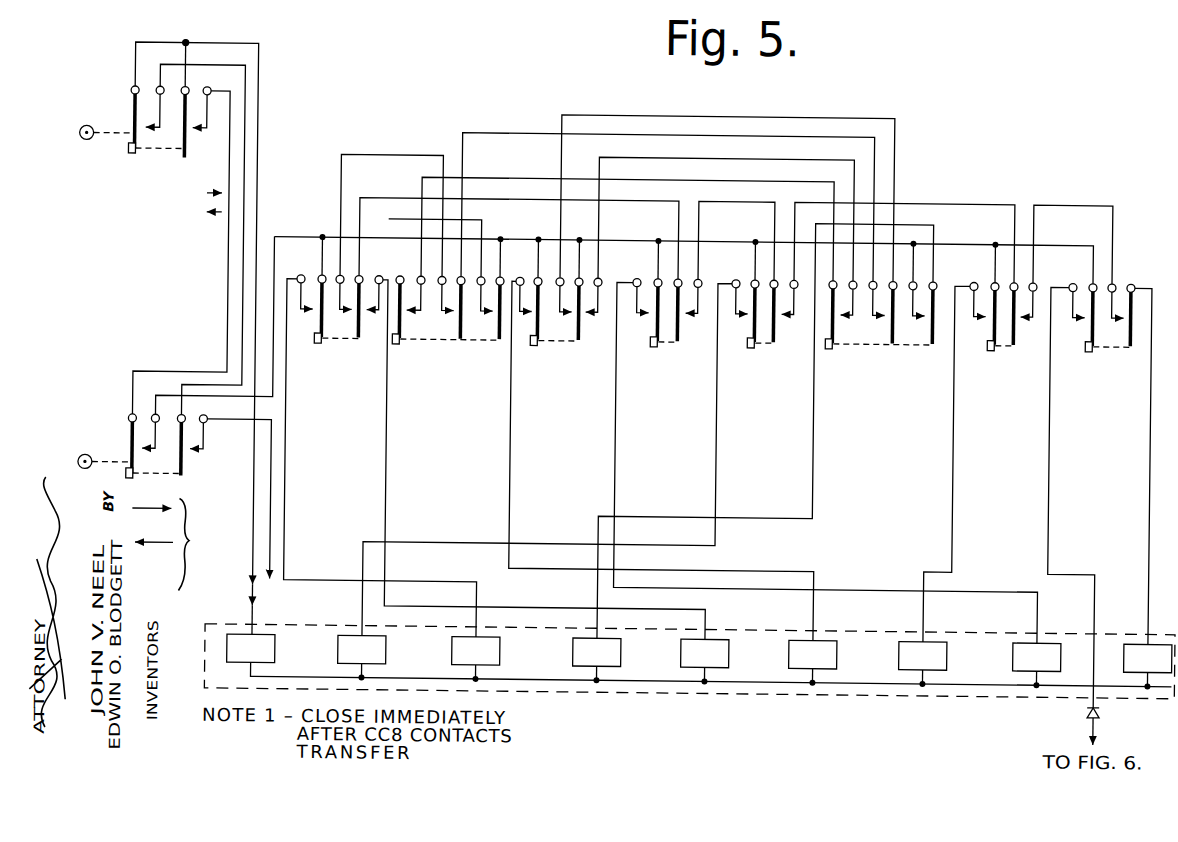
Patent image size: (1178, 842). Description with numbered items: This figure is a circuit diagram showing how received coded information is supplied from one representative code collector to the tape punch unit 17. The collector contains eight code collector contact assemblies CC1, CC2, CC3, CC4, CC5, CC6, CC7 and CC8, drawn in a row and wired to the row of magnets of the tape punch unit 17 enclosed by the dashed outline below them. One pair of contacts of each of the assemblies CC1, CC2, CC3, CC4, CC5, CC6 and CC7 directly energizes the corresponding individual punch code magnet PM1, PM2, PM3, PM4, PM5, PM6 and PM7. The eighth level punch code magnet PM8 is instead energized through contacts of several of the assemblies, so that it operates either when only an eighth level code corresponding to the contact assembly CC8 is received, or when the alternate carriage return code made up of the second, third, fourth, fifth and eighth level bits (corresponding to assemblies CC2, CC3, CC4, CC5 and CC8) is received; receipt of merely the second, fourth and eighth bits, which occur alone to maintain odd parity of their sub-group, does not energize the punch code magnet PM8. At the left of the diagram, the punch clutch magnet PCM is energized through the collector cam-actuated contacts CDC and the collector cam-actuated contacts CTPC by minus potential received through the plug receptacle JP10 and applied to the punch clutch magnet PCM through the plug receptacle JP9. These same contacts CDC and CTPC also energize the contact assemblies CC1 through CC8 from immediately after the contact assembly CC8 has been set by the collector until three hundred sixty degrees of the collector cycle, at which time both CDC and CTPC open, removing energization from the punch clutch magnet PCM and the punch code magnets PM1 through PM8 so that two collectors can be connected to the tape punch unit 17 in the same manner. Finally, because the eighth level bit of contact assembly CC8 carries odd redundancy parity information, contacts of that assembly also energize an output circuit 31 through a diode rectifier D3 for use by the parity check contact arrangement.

The tape punch unit 17 is at (651, 694).
The output circuit 31 is at (1101, 719).
The diode rectifier D3 is at (1106, 705).
The plug receptacle JP9 is at (261, 593).
The plug receptacle JP10 is at (276, 577).
The collector cam-actuated contacts CDC is at (151, 152).
The collector cam-actuated contacts CTPC is at (162, 502).
The code collector contact assembly CC1 is at (764, 331).
The code collector contact assembly CC2 is at (339, 326).
The code collector contact assembly CC3 is at (881, 332).
The code collector contact assembly CC4 is at (448, 327).
The code collector contact assembly CC5 is at (558, 328).
The code collector contact assembly CC6 is at (1003, 333).
The code collector contact assembly CC7 is at (667, 330).
The code collector contact assembly CC8 is at (1101, 335).
The punch clutch magnet PCM is at (251, 648).
The punch code magnet PM1 is at (361, 656).
The punch code magnet PM2 is at (475, 658).
The punch code magnet PM3 is at (596, 659).
The punch code magnet PM4 is at (704, 660).
The punch code magnet PM5 is at (812, 661).
The punch code magnet PM6 is at (922, 663).
The punch code magnet PM7 is at (1036, 664).
The punch code magnet PM8 is at (1147, 665).